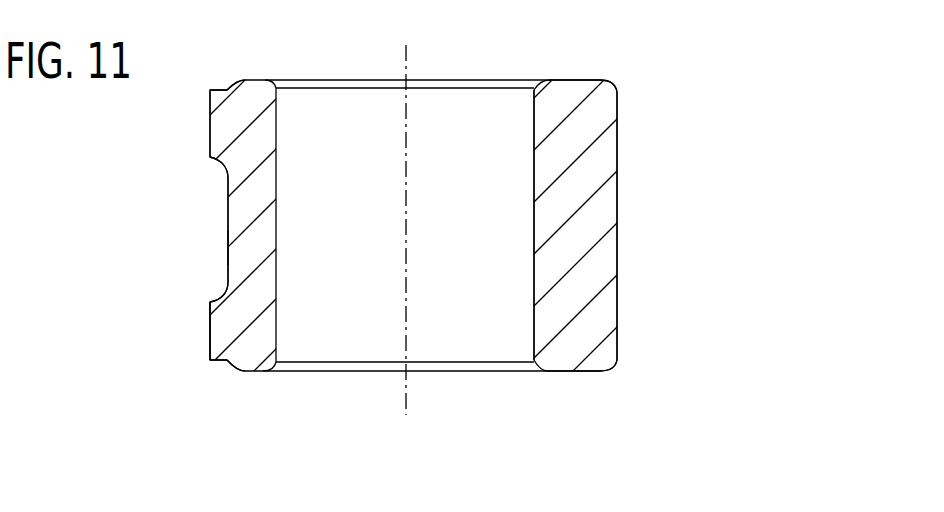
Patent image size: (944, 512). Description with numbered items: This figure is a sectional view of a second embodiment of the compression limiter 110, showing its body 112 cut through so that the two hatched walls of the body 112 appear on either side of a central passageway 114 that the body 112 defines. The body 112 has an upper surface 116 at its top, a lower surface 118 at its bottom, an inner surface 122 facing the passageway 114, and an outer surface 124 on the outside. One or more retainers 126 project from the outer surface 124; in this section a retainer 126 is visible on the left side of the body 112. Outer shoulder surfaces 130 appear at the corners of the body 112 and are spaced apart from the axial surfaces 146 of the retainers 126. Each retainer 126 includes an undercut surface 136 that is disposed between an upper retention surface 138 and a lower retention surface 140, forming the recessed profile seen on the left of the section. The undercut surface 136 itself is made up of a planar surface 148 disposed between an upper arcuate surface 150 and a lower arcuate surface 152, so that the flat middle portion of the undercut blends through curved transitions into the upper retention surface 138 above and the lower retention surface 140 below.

The compression limiter 110 is at (704, 97).
The body 112 is at (622, 212).
The passageway 114 is at (482, 118).
The upper surface 116 is at (574, 80).
The lower surface 118 is at (562, 372).
The inner surface 122 is at (495, 243).
The outer surface 124 is at (618, 153).
The retainer 126 is at (207, 347).
The outer shoulder surface 130 is at (240, 79).
The undercut surface 136 is at (228, 218).
The upper retention surface 138 is at (210, 130).
The lower retention surface 140 is at (210, 313).
The axial surface 146 is at (212, 89).
The planar surface 148 is at (228, 247).
The upper arcuate surface 150 is at (220, 165).
The lower arcuate surface 152 is at (222, 292).